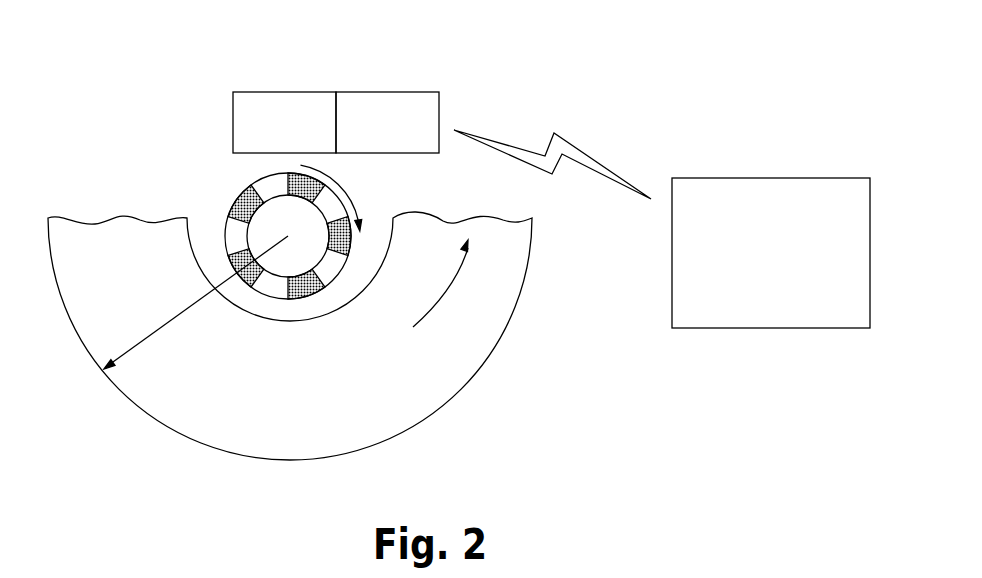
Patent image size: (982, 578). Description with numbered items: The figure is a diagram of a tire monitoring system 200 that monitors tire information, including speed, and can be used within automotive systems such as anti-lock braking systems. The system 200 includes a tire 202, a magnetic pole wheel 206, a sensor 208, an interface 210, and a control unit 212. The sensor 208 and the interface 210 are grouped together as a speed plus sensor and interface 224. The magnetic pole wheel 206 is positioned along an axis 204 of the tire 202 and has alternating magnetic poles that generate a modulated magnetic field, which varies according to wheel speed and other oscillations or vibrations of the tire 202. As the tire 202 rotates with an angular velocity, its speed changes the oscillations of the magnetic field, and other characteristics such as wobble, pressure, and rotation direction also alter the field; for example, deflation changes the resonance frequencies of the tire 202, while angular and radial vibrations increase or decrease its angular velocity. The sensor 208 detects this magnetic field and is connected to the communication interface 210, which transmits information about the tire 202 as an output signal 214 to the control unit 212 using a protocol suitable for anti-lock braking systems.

The tire monitoring system 200 is at (95, 58).
The tire 202 is at (487, 360).
The axis 204 is at (158, 332).
The magnetic pole wheel 206 is at (220, 188).
The sensor 208 is at (302, 146).
The interface 210 is at (407, 146).
The control unit 212 is at (788, 280).
The output signal 214 is at (585, 104).
The speed plus sensor and interface 224 is at (570, 425).